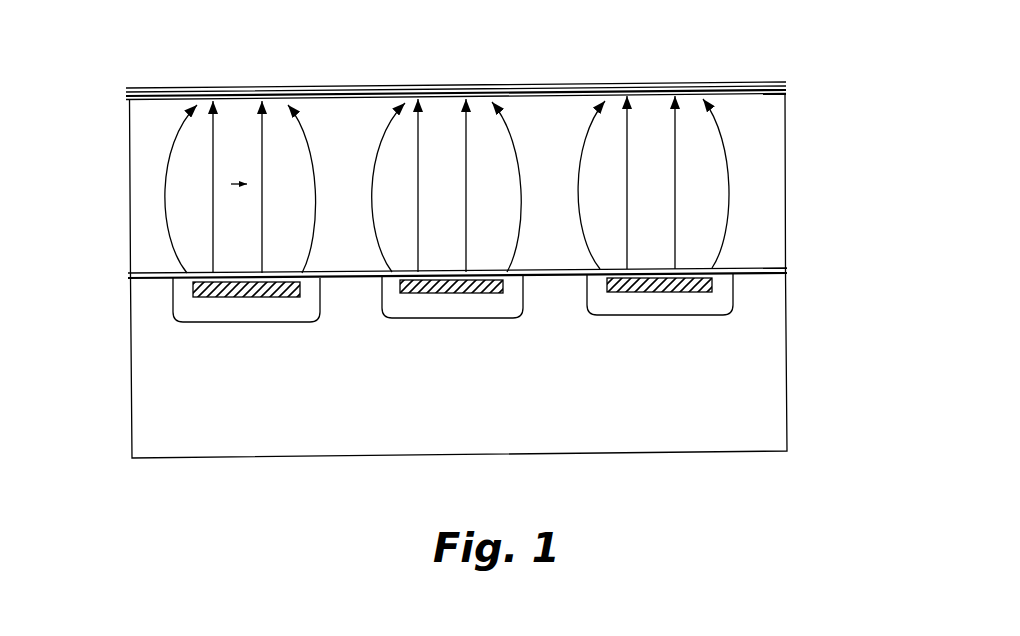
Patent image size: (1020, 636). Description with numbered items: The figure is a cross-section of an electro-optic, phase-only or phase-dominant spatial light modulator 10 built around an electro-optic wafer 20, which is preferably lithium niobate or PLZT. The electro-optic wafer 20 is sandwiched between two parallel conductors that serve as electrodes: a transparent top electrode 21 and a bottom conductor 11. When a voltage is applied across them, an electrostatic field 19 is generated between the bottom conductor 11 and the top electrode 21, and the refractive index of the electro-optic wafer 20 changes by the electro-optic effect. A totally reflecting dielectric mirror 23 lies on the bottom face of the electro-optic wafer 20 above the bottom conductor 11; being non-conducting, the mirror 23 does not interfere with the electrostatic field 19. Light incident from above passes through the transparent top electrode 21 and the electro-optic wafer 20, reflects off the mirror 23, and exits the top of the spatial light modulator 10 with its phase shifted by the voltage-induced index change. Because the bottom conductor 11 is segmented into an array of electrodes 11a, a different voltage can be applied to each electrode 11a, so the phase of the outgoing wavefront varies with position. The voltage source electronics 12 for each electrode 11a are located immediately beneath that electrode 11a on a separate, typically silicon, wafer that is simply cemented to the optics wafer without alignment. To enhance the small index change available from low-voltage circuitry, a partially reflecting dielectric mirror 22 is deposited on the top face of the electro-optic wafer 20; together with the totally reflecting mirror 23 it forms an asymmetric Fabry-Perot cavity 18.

The spatial light modulator 10 is at (465, 72).
The bottom conductor 11 is at (380, 324).
The electrode 11a is at (193, 289).
The electronics layer 12 is at (703, 310).
The asymmetric Fabry-Perot cavity 18 is at (382, 184).
The electrostatic field 19 is at (164, 189).
The electro-optic wafer 20 is at (788, 189).
The top electrode 21 is at (787, 82).
The partially reflecting mirror 22 is at (787, 91).
The totally reflecting dielectric mirror 23 is at (788, 269).